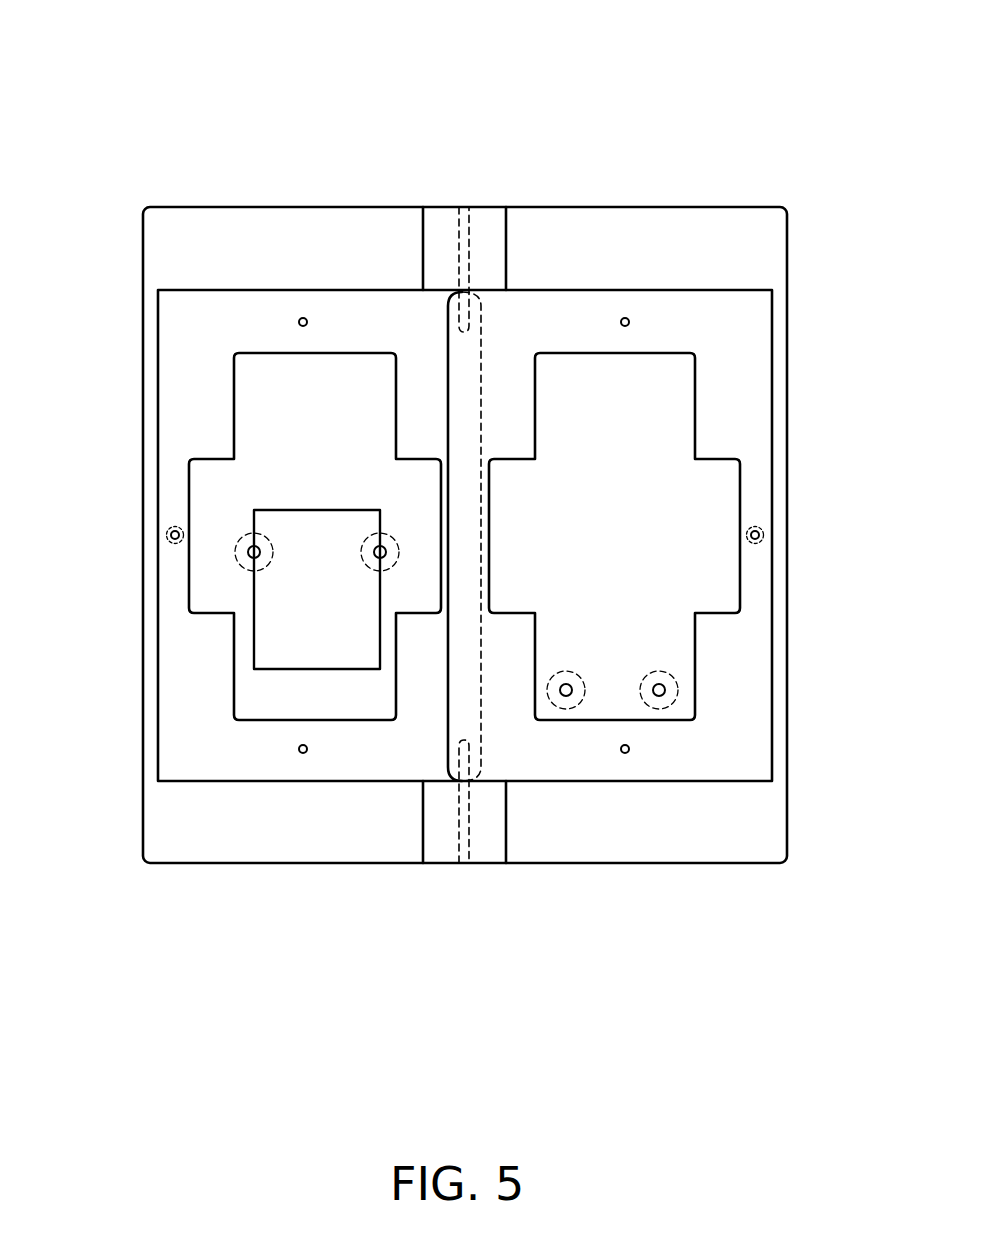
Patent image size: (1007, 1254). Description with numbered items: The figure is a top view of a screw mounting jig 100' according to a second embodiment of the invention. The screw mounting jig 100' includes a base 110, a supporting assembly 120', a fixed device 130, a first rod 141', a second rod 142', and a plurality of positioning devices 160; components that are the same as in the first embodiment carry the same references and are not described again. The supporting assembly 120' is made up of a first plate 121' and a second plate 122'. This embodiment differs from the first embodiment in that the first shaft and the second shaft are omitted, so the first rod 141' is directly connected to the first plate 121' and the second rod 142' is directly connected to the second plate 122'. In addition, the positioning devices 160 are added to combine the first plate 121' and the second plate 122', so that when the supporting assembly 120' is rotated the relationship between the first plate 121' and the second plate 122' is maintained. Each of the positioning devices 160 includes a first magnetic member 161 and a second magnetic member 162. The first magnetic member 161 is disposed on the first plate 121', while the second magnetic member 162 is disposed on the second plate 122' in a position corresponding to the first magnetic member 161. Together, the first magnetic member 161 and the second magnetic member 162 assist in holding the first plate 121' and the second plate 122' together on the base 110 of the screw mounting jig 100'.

The screw mounting jig 100' is at (451, 534).
The base 110 is at (743, 250).
The supporting assembly 120' is at (386, 531).
The first plate 121' is at (422, 535).
The second plate 122' is at (406, 534).
The fixed device 130 is at (172, 534).
The first rod 141' is at (472, 839).
The second rod 142' is at (467, 234).
The positioning devices 160 is at (682, 80).
The first magnetic member 161 is at (303, 318).
The second magnetic member 162 is at (625, 318).